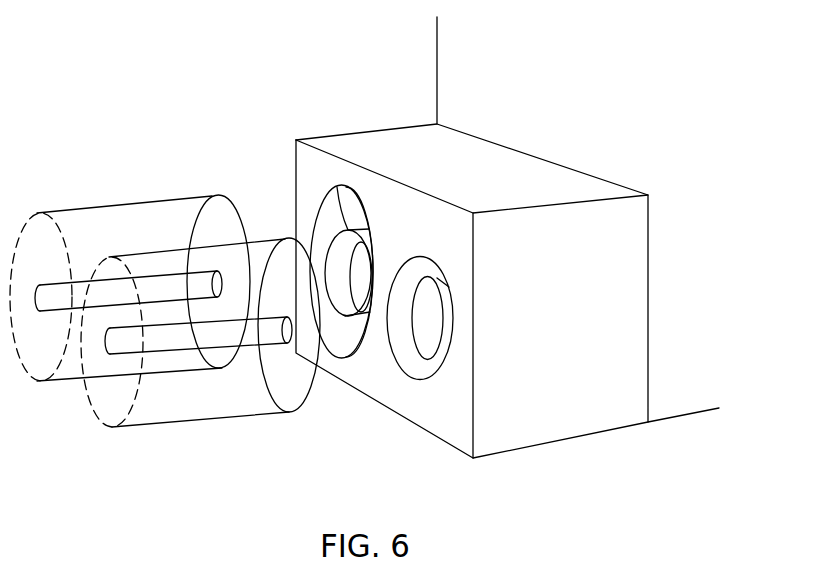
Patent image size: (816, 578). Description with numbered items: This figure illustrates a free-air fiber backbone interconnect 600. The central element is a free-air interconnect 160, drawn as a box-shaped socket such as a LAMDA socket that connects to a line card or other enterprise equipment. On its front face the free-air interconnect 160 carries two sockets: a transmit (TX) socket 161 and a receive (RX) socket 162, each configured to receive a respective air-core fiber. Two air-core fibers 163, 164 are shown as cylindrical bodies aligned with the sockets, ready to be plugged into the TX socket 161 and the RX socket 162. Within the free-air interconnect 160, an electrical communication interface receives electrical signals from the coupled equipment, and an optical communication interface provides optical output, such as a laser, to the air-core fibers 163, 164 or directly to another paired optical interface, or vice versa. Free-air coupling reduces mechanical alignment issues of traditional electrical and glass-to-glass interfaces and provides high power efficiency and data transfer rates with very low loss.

The free-air fiber backbone interconnect 600 is at (682, 72).
The free-air interconnect 160 is at (545, 160).
The transmit (TX) socket 161 is at (428, 378).
The receive (RX) socket 162 is at (360, 344).
The air-core fiber 163 is at (148, 241).
The air-core fiber 164 is at (120, 193).